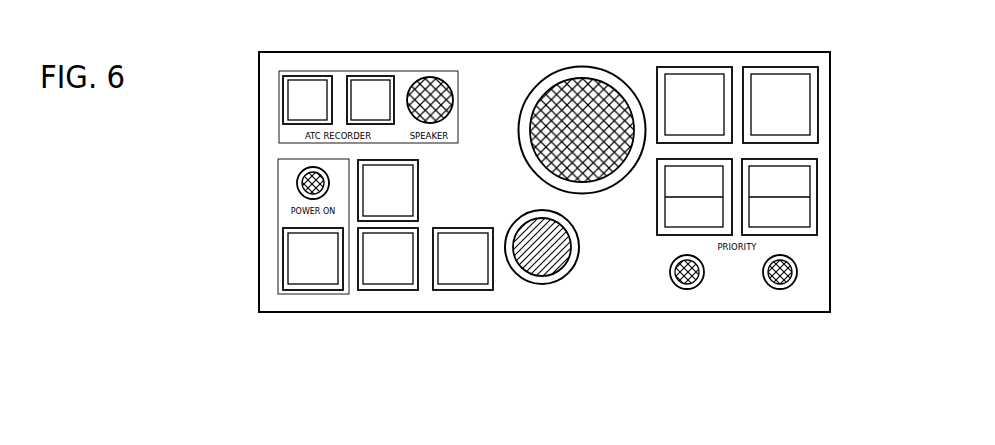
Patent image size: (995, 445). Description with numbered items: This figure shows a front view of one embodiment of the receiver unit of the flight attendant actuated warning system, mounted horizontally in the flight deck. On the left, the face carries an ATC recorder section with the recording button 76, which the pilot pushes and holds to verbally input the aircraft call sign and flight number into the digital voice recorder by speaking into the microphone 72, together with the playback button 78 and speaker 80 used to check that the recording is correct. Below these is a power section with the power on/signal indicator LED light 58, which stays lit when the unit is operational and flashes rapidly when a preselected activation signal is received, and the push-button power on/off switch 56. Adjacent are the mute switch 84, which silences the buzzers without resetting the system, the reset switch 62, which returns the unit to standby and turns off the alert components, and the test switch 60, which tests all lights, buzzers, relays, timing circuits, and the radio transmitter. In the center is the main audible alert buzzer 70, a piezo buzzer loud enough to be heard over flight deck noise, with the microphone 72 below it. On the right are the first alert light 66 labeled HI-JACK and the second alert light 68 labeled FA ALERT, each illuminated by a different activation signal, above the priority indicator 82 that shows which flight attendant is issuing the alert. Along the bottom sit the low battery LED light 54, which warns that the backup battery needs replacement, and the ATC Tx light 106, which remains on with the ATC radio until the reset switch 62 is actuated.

The low battery LED light 54 is at (675, 273).
The power on/off switch 56 is at (292, 277).
The power on/signal indicator LED light 58 is at (305, 185).
The test switch 60 is at (477, 277).
The reset switch 62 is at (397, 277).
The first alert light 66 is at (700, 80).
The second alert light 68 is at (793, 82).
The audible alert buzzer 70 is at (607, 78).
The microphone 72 is at (567, 240).
The recording button 76 is at (322, 83).
The playback button 78 is at (383, 85).
The speaker 80 is at (445, 83).
The numerical priority indicator 82 is at (800, 183).
The mute switch 84 is at (408, 190).
The ATC Tx light 106 is at (768, 280).